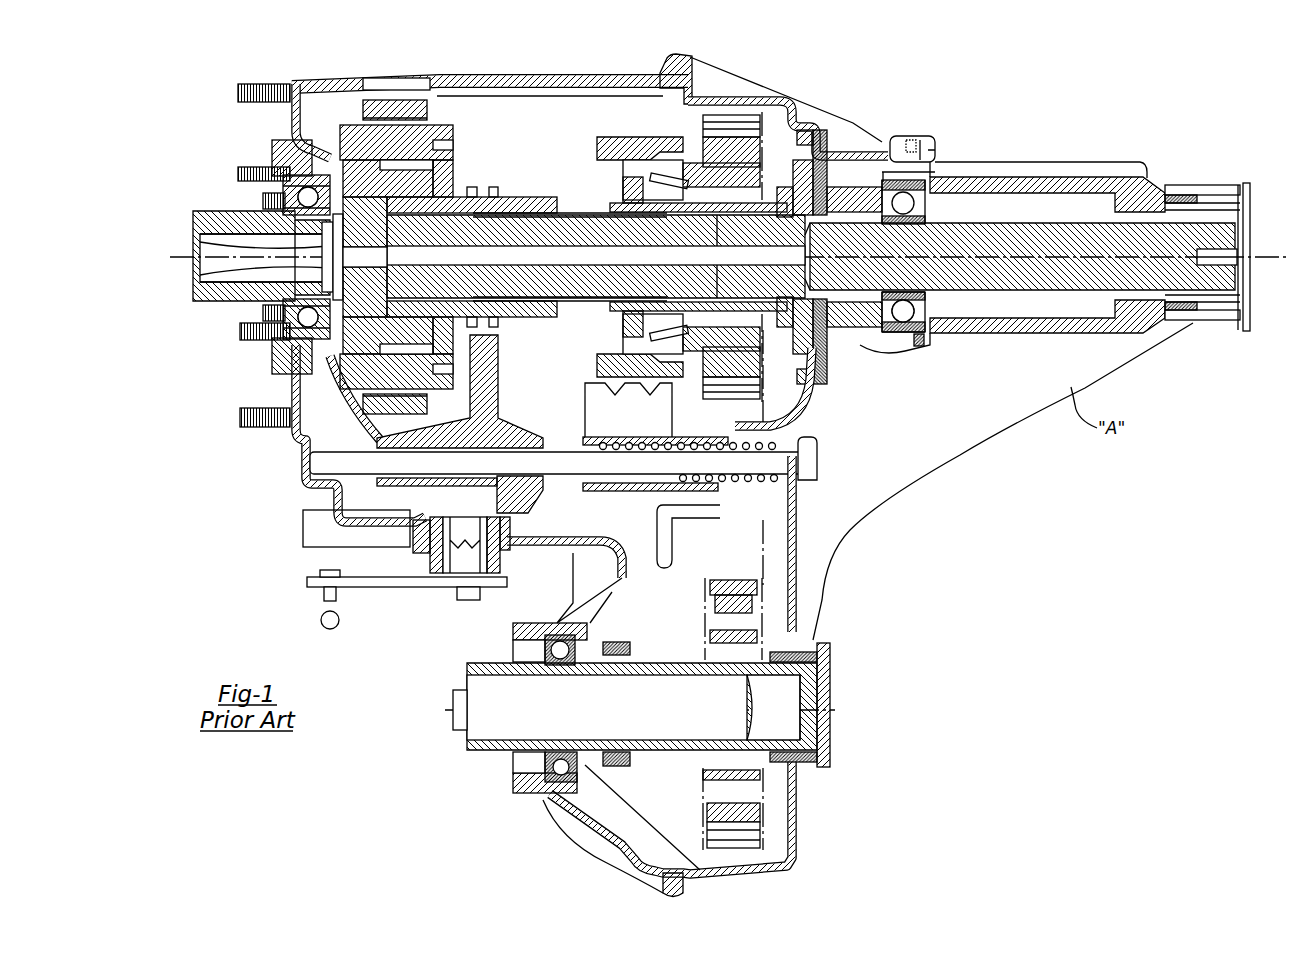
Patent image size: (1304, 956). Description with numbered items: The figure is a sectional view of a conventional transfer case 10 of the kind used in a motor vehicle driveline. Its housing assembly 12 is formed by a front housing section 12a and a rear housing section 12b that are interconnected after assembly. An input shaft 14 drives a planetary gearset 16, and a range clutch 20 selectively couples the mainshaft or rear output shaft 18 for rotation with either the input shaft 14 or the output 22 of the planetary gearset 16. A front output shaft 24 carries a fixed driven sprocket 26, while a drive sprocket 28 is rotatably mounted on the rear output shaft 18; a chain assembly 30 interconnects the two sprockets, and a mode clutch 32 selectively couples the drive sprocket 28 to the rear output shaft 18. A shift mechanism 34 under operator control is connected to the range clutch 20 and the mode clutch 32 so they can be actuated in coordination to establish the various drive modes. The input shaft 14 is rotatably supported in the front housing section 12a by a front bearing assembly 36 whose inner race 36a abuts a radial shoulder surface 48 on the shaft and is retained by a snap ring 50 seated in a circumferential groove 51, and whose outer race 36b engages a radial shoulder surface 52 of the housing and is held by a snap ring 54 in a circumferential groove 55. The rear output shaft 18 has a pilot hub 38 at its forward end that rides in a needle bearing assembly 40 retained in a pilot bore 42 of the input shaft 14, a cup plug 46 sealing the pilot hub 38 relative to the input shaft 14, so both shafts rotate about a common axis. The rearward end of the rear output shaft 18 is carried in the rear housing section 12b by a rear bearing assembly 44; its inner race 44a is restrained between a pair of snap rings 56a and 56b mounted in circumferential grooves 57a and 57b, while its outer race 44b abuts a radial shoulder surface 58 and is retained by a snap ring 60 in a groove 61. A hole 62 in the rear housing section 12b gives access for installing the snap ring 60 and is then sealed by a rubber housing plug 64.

The transfer case 10 is at (715, 336).
The housing assembly 12 is at (510, 68).
The front housing section 12a is at (310, 84).
The rear housing section 12b is at (1033, 183).
The input shaft 14 is at (214, 214).
The planetary gearset 16 is at (452, 139).
The rear output shaft 18 is at (1063, 226).
The range clutch 20 is at (504, 199).
The output of planetary gearset 22 is at (470, 171).
The front output shaft 24 is at (620, 850).
The driven sprocket 26 is at (763, 590).
The drive sprocket 28 is at (725, 165).
The chain assembly 30 is at (757, 848).
The mode clutch 32 is at (605, 144).
The shift mechanism 34 is at (429, 584).
The front bearing assembly 36 is at (300, 188).
The inner race 36a is at (290, 205).
The outer race 36b is at (307, 193).
The pilot hub 38 is at (298, 240).
The needle bearing assembly 40 is at (405, 232).
The pilot bore 42 is at (318, 266).
The rear bearing assembly 44 is at (922, 320).
The inner race 44a is at (884, 302).
The outer race 44b is at (905, 323).
The cup plug 46 is at (318, 258).
The radial shoulder surface 48 is at (340, 322).
The snap ring 50 is at (333, 312).
The circumferential groove 51 is at (332, 292).
The radial shoulder surface 52 is at (305, 370).
The snap ring 54 is at (340, 328).
The circumferential groove 55 is at (305, 415).
The snap ring 56a is at (878, 212).
The snap ring 56b is at (925, 213).
The circumferential groove 57a is at (847, 285).
The circumferential groove 57b is at (925, 298).
The radial shoulder surface 58 is at (924, 340).
The snap ring 60 is at (938, 170).
The groove 61 is at (890, 190).
The hole 62 is at (922, 150).
The rubber housing plug 64 is at (905, 140).